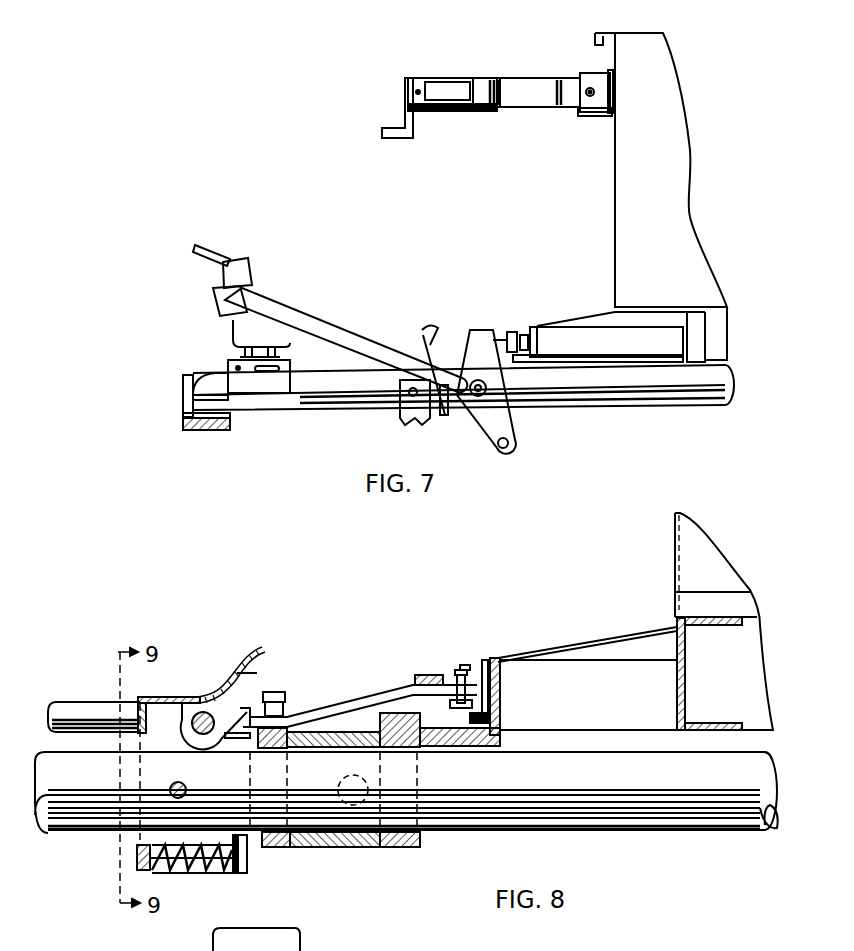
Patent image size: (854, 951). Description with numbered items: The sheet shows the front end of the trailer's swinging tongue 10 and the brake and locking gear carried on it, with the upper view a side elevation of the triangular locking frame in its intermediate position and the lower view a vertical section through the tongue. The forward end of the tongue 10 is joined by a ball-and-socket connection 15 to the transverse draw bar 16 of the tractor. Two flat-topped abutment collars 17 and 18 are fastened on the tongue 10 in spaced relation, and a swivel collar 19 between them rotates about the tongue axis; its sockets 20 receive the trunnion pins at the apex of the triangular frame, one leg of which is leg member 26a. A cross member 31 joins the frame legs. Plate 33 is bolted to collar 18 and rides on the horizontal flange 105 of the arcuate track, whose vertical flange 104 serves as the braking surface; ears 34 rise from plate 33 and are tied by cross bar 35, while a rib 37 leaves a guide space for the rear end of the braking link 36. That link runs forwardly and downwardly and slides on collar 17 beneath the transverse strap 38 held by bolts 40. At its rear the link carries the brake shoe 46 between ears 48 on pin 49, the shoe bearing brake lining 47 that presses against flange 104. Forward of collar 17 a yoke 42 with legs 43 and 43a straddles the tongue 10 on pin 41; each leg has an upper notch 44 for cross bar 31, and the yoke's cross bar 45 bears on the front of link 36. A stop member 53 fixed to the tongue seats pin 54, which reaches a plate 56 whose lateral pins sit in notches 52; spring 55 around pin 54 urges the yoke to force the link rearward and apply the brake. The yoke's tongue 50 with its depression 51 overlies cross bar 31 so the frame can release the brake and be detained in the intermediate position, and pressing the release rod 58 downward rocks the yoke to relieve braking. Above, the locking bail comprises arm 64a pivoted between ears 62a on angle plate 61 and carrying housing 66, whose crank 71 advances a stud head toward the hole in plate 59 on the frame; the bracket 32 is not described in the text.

In FIG. 7, the tubular tongue 10 is at (620, 408).
In FIG. 8, the tubular tongue 10 is at (650, 808).
In FIG. 7, the ball-and-socket connection 15 is at (588, 355).
In FIG. 7, the transverse draw bar 16 is at (183, 425).
In FIG. 8, the abutment collar 17 is at (270, 848).
In FIG. 8, the abutment collar 18 is at (405, 848).
In FIG. 8, the swivel collar 19 is at (345, 848).
In FIG. 8, the sockets 20 is at (340, 785).
In FIG. 7, the leg member 26a is at (305, 322).
In FIG. 8, the cross member 31 is at (203, 715).
In FIG. 7, the bracket 32 is at (183, 383).
In FIG. 8, the plate 33 is at (420, 735).
In FIG. 8, the ear 34 is at (445, 690).
In FIG. 8, the cross bar 35 is at (428, 676).
In FIG. 8, the braking link 36 is at (372, 697).
In FIG. 8, the rib 37 is at (410, 687).
In FIG. 8, the transverse strap 38 is at (290, 716).
In FIG. 8, the bolts 40 is at (285, 695).
In FIG. 8, the pin 41 is at (184, 786).
In FIG. 8, the yoke 42 is at (148, 725).
In FIG. 7, the leg 43 is at (422, 412).
In FIG. 8, the leg 43a is at (140, 700).
In FIG. 8, the notch 44 is at (168, 708).
In FIG. 8, the cross bar 45 is at (235, 712).
In FIG. 8, the brake shoe 46 is at (484, 660).
In FIG. 8, the brake lining 47 is at (494, 658).
In FIG. 8, the ears 48 is at (470, 692).
In FIG. 8, the pin 49 is at (462, 668).
In FIG. 8, the tongue 50 is at (265, 648).
In FIG. 8, the depression 51 is at (240, 673).
In FIG. 8, the notches 52 is at (175, 870).
In FIG. 8, the stop member 53 is at (245, 872).
In FIG. 8, the pin 54 is at (195, 872).
In FIG. 8, the spring 55 is at (215, 872).
In FIG. 8, the plate 56 is at (137, 862).
In FIG. 8, the release rod 58 is at (78, 705).
In FIG. 7, the plate 59 is at (213, 243).
In FIG. 7, the angle plate 61 is at (590, 117).
In FIG. 7, the ears 62a is at (600, 80).
In FIG. 7, the arm 64a is at (538, 100).
In FIG. 7, the housing 66 is at (468, 84).
In FIG. 7, the handle crank 71 is at (393, 139).
In FIG. 7, the vertically extending flange 104 is at (555, 335).
In FIG. 8, the vertically extending flange 104 is at (500, 712).
In FIG. 8, the horizontal flange 105 is at (480, 740).